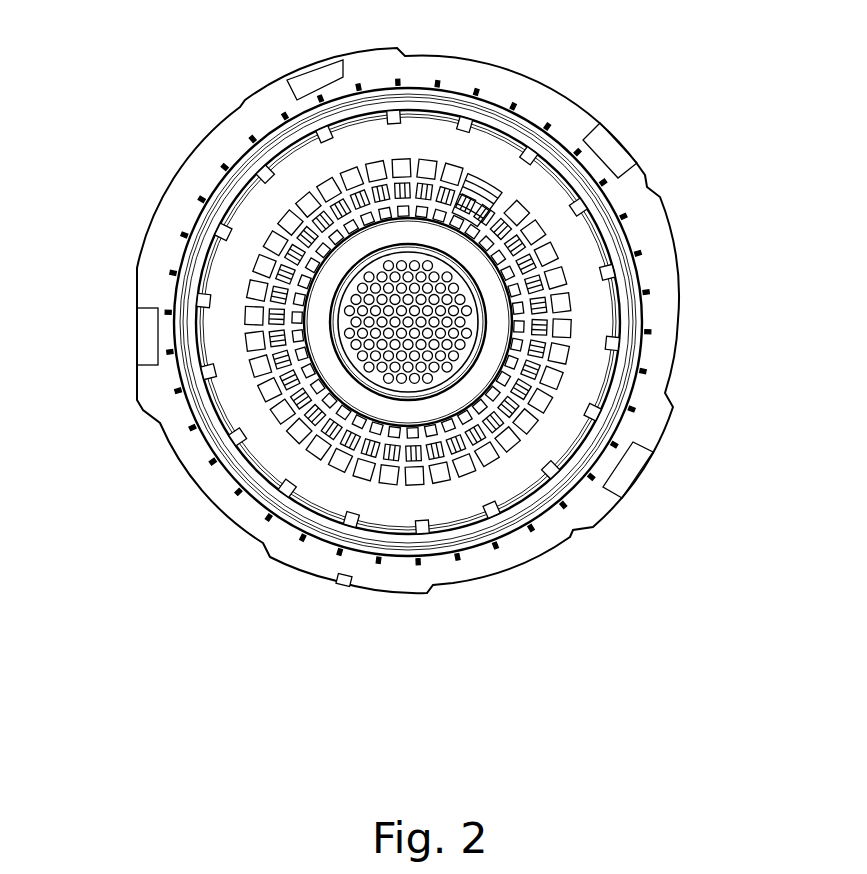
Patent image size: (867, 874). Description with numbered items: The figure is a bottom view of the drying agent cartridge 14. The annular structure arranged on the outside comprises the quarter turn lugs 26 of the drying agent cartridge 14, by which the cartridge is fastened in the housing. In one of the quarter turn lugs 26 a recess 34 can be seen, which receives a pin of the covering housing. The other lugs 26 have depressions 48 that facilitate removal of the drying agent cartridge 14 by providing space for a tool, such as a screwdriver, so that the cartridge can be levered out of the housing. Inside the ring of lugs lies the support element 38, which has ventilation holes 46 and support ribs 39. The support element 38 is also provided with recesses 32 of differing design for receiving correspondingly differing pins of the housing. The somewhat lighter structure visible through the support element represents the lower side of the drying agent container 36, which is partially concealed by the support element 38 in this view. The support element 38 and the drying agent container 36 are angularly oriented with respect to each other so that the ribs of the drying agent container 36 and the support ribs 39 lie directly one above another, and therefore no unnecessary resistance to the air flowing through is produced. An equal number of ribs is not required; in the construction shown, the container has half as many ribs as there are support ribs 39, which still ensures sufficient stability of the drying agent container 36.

The drying agent cartridge 14 is at (168, 188).
The quarter turn lugs 26 is at (300, 557).
The recesses 32 is at (480, 207).
The recess 34 is at (340, 586).
The drying agent container 36 is at (380, 345).
The support element 38 is at (593, 218).
The support ribs 39 is at (313, 440).
The ventilation holes 46 is at (563, 363).
The depressions 48 is at (633, 468).